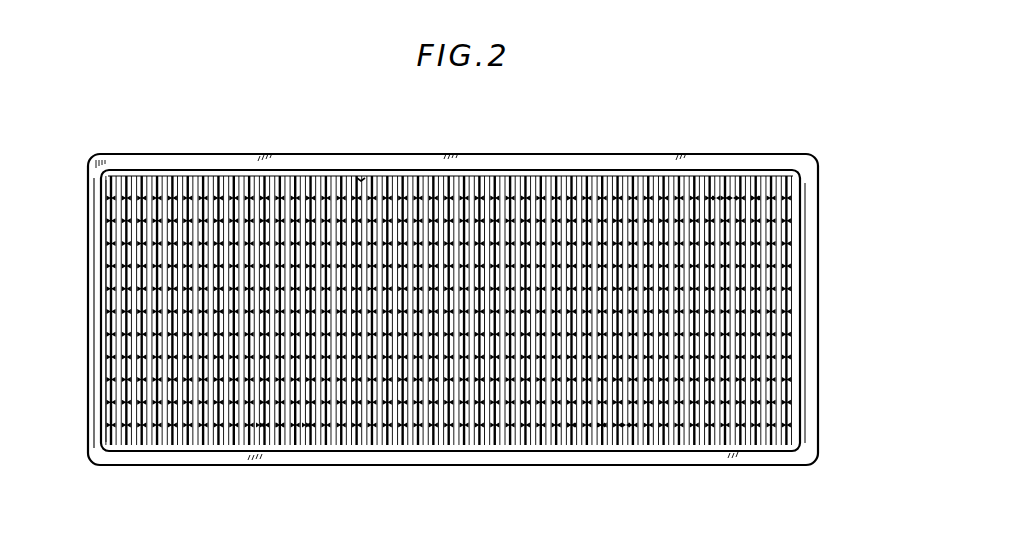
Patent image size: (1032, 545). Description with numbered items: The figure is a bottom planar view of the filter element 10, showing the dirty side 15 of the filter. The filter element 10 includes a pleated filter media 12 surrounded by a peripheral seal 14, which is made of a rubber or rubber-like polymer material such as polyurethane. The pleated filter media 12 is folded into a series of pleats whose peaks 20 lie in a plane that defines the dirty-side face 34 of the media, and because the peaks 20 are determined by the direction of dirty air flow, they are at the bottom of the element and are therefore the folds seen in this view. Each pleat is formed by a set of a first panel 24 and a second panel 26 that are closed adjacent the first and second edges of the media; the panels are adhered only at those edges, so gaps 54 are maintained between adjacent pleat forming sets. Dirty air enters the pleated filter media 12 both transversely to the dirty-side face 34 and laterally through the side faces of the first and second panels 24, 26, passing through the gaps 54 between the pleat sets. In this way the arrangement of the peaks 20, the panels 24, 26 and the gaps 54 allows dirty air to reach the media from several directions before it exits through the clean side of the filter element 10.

The filter element 10 is at (442, 143).
The pleated filter media 12 is at (592, 172).
The peripheral seal 14 is at (118, 152).
The dirty side 15 is at (752, 263).
The peaks 20 is at (747, 168).
The first panel 24 is at (783, 327).
The second panel 26 is at (103, 292).
The dirty-side face 34 is at (353, 172).
The gaps 54 is at (278, 168).